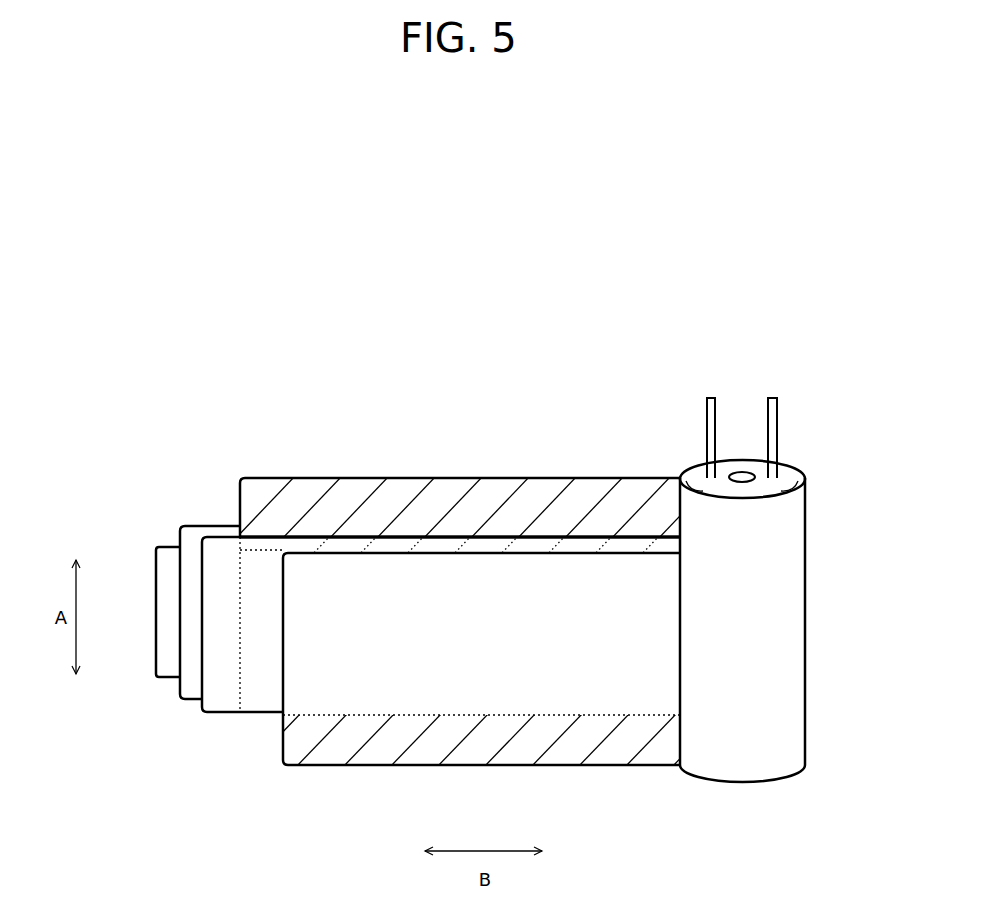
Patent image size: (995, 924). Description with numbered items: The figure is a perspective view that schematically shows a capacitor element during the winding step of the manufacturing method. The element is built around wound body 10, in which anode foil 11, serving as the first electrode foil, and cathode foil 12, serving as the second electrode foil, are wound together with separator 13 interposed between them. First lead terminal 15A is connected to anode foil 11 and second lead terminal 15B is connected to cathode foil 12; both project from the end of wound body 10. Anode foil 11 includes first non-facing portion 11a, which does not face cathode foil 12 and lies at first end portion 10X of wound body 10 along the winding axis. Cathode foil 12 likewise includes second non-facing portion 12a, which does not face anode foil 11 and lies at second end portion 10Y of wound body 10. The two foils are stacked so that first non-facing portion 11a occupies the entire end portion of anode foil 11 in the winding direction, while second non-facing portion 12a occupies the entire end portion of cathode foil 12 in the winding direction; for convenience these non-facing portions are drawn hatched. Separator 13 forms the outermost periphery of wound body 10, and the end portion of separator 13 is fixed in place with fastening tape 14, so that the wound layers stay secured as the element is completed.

The wound body 10 is at (527, 356).
The first end portion 10X is at (793, 461).
The second end portion 10Y is at (790, 780).
The anode foil 11 is at (314, 491).
The first non-facing portion 11a is at (502, 487).
The cathode foil 12 is at (304, 698).
The second non-facing portion 12a is at (421, 753).
The separator 13 is at (218, 552).
The fastening tape 14 is at (168, 674).
The first lead terminal 15A is at (716, 410).
The second lead terminal 15B is at (769, 410).